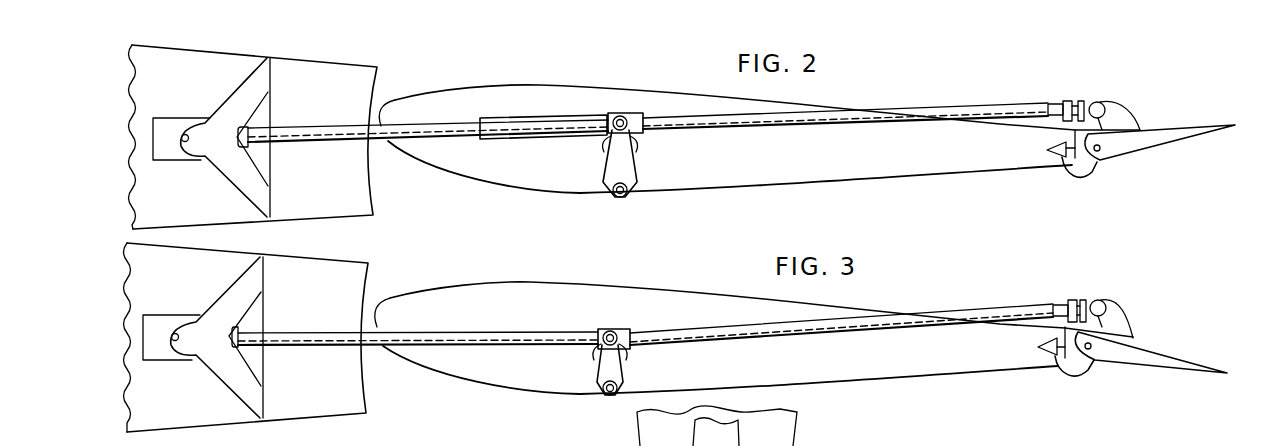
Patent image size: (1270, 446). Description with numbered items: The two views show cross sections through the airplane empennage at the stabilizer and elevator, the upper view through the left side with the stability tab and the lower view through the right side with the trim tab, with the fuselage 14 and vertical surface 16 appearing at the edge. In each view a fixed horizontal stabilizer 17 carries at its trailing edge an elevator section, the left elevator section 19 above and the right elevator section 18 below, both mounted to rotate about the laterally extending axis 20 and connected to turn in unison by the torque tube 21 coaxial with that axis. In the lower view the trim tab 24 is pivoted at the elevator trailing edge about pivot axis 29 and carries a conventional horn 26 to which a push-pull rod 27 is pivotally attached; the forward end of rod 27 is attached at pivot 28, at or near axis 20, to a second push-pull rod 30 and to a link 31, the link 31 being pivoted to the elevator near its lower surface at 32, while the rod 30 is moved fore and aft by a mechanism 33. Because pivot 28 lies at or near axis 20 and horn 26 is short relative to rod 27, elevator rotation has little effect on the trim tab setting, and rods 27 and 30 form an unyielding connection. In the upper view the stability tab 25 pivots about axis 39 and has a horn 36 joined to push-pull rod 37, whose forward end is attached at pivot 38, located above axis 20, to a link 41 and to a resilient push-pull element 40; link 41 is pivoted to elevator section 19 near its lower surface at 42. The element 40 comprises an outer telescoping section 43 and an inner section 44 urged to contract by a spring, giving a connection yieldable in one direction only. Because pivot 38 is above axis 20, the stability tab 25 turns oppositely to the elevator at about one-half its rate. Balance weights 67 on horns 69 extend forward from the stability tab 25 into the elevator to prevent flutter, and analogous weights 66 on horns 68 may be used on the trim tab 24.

In FIG. 2, the fixed horizontal stabilizer 17 is at (313, 60).
In FIG. 3, the fixed horizontal stabilizer 17 is at (333, 258).
In FIG. 2, the left elevator section 19 is at (823, 167).
In FIG. 2, the inner telescoping section 44 is at (330, 130).
In FIG. 2, the outer telescoping section 43 is at (530, 122).
In FIG. 2, the resilient push-pull element 40 is at (488, 113).
In FIG. 2, the pivot axis 38 is at (622, 121).
In FIG. 2, the link 41 is at (622, 165).
In FIG. 2, the link pivot 42 is at (625, 197).
In FIG. 2, the torque tube 21 is at (603, 143).
In FIG. 3, the torque tube 21 is at (615, 333).
In FIG. 2, the push-pull rod 37 is at (911, 110).
In FIG. 2, the horn 36 is at (1113, 117).
In FIG. 2, the stability tab 25 is at (1128, 152).
In FIG. 2, the horn 69 is at (1088, 173).
In FIG. 2, the balance weight 67 is at (1052, 152).
In FIG. 2, the pivot axis 39 is at (1094, 152).
In FIG. 3, the rod moving mechanism 33 is at (162, 327).
In FIG. 3, the right elevator section 18 is at (660, 300).
In FIG. 3, the second push-pull rod 30 is at (498, 337).
In FIG. 3, the pivot axis 28 is at (608, 331).
In FIG. 3, the elevator axis of rotation 20 is at (620, 350).
In FIG. 3, the link 31 is at (604, 367).
In FIG. 3, the link pivot 32 is at (608, 396).
In FIG. 3, the push-pull rod 27 is at (930, 318).
In FIG. 3, the horn 26 is at (1113, 325).
In FIG. 3, the trim tab 24 is at (1142, 357).
In FIG. 3, the pivot axis 29 is at (1090, 351).
In FIG. 3, the balance weight 66 is at (1047, 349).
In FIG. 3, the horn 68 is at (1072, 376).
In FIG. 3, the fuselage 14 is at (777, 422).
In FIG. 3, the vertical surface 16 is at (753, 445).